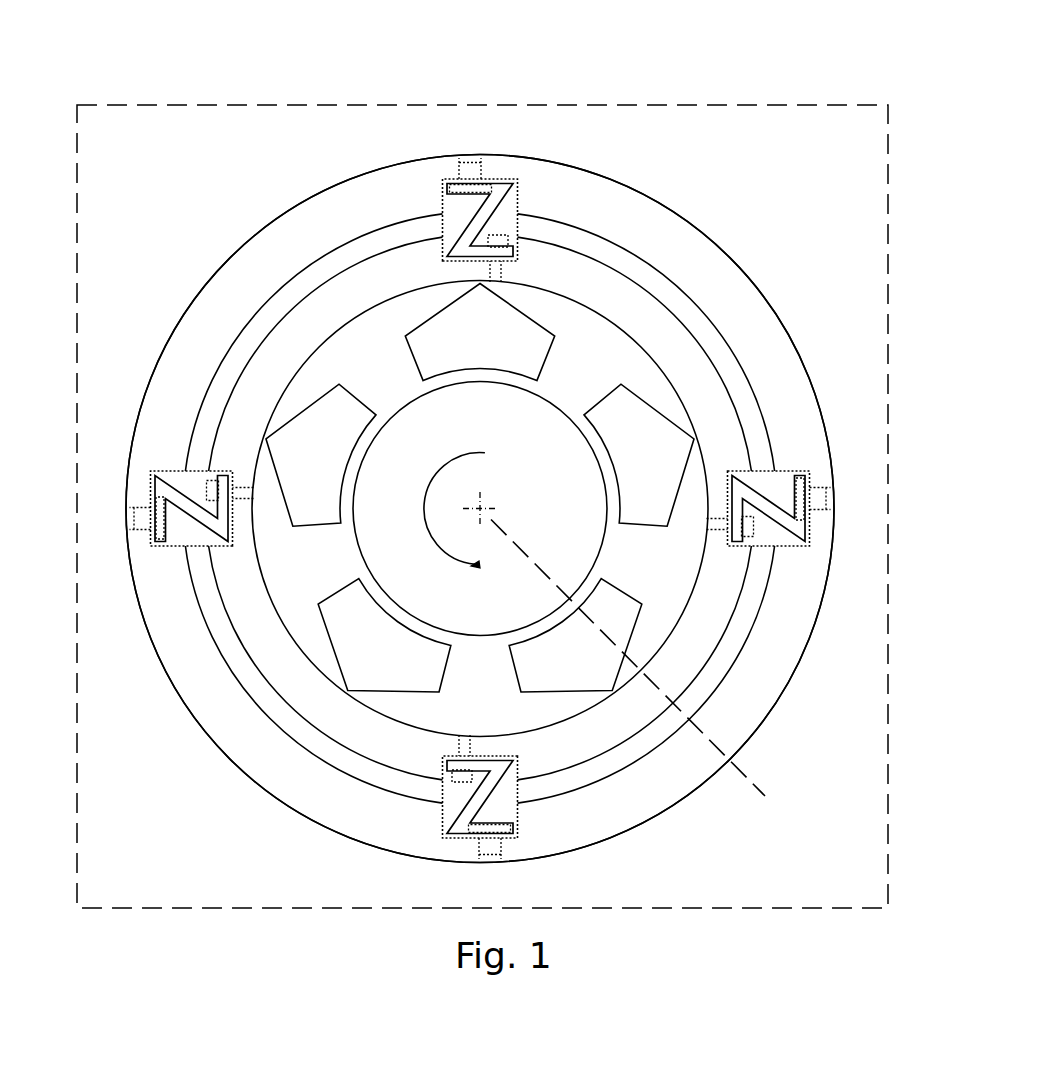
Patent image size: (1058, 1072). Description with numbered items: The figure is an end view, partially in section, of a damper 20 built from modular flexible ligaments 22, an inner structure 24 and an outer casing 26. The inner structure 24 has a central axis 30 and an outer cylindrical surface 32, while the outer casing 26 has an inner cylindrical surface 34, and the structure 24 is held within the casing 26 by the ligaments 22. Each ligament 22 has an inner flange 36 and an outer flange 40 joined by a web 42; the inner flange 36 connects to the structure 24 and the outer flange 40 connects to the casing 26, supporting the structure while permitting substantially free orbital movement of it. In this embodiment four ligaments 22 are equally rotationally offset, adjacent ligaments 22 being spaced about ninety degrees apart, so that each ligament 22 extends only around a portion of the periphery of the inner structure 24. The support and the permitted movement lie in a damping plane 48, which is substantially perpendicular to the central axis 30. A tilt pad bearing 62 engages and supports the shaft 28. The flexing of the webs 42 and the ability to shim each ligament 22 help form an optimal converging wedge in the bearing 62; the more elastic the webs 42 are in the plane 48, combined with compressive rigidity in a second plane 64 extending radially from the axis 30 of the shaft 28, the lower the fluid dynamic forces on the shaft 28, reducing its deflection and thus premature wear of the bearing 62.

The damper 20 is at (247, 782).
The modular flexible ligament 22 is at (472, 222).
The inner structure 24 is at (630, 338).
The outer casing 26 is at (800, 368).
The shaft 28 is at (483, 637).
The central axis 30 is at (482, 507).
The outer cylindrical surface 32 is at (670, 307).
The inner cylindrical surface 34 is at (740, 368).
The inner flange 36 is at (462, 258).
The outer flange 40 is at (496, 180).
The web 42 is at (510, 192).
The damping plane 48 is at (745, 103).
The tilt pad bearing 62 is at (323, 413).
The second plane 64 is at (750, 773).